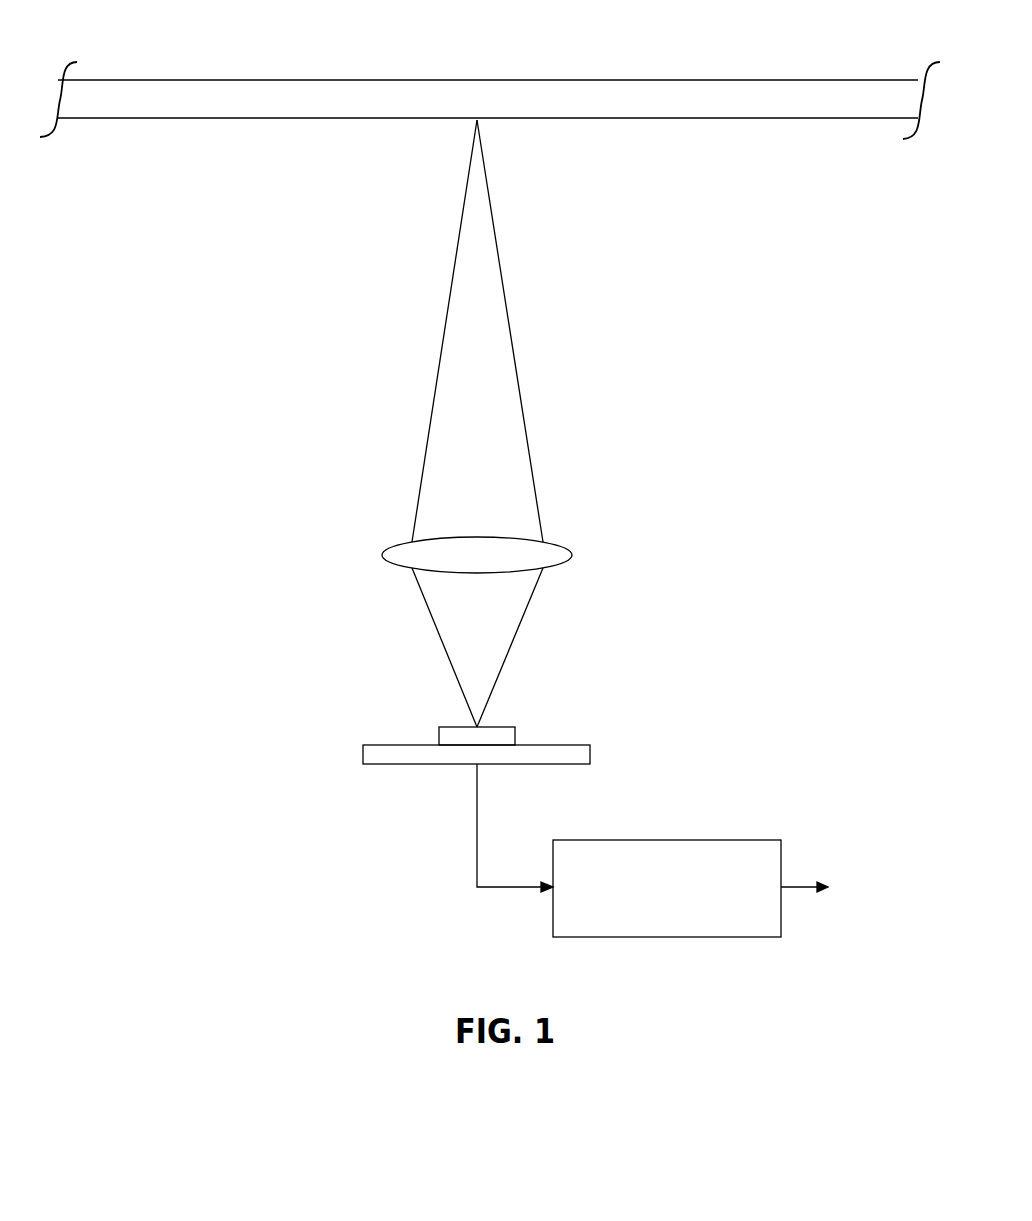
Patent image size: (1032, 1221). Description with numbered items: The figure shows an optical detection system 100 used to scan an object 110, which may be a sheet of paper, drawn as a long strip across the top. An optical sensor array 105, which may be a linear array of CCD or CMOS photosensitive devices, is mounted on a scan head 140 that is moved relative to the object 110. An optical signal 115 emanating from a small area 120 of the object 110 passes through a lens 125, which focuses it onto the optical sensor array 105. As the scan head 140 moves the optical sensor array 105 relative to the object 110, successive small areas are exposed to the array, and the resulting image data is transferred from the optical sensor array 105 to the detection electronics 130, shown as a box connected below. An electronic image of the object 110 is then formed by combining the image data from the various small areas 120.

The optical detection system 100 is at (782, 615).
The optical sensor array 105 is at (505, 727).
The object 110 is at (628, 80).
The optical signal 115 is at (467, 408).
The area 120 is at (447, 141).
The lens 125 is at (560, 544).
The detection electronics 130 is at (665, 840).
The scan head 140 is at (583, 745).